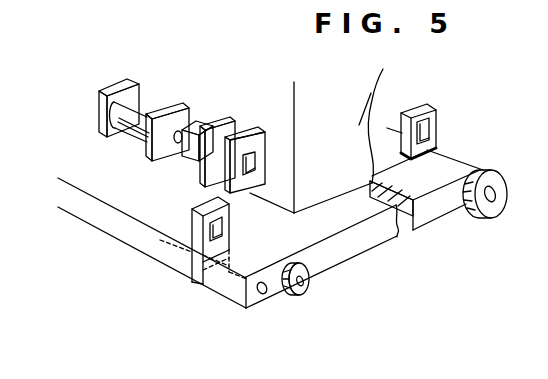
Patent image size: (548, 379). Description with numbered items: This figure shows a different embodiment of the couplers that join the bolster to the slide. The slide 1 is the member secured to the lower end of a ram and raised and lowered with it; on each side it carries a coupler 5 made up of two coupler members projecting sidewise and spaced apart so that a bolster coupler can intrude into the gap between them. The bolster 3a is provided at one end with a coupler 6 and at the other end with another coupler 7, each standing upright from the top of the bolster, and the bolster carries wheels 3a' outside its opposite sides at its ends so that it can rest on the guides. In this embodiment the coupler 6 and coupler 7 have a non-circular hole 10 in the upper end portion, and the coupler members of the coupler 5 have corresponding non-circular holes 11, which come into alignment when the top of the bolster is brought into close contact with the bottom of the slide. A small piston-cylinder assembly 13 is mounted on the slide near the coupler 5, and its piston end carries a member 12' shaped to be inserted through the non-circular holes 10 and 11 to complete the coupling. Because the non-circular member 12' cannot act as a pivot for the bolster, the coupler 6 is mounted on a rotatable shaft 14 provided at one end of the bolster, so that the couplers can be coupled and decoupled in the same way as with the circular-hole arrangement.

The slide 1 is at (326, 132).
The bolster 3a is at (364, 229).
The wheels 3a' is at (404, 254).
The coupler 5 is at (234, 116).
The coupler 6 is at (197, 219).
The coupler 7 is at (426, 104).
The hole 10 is at (425, 129).
The hole 11 is at (247, 161).
The member 12' is at (200, 113).
The piston-cylinder assembly 13 is at (133, 118).
The rotatable shaft 14 is at (266, 295).